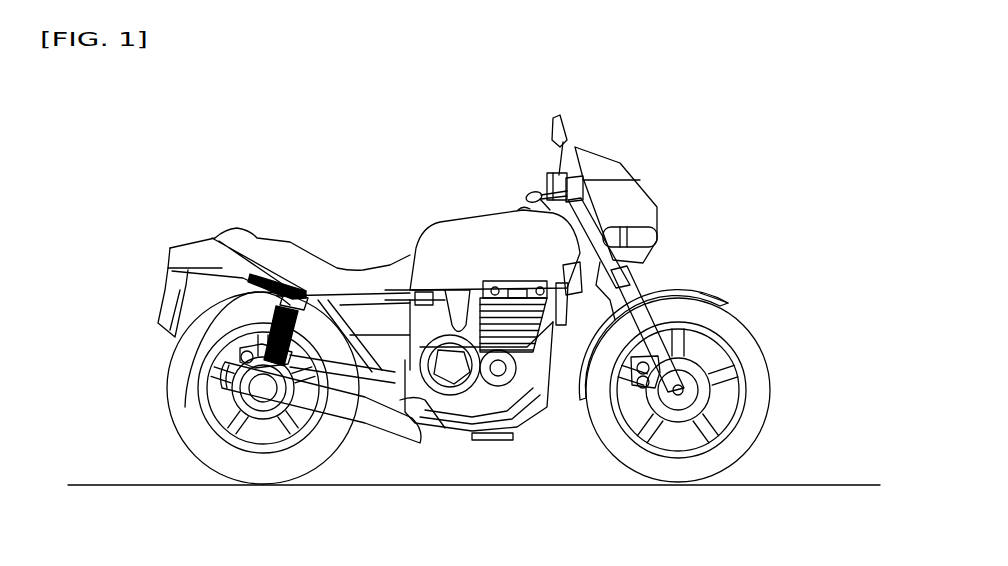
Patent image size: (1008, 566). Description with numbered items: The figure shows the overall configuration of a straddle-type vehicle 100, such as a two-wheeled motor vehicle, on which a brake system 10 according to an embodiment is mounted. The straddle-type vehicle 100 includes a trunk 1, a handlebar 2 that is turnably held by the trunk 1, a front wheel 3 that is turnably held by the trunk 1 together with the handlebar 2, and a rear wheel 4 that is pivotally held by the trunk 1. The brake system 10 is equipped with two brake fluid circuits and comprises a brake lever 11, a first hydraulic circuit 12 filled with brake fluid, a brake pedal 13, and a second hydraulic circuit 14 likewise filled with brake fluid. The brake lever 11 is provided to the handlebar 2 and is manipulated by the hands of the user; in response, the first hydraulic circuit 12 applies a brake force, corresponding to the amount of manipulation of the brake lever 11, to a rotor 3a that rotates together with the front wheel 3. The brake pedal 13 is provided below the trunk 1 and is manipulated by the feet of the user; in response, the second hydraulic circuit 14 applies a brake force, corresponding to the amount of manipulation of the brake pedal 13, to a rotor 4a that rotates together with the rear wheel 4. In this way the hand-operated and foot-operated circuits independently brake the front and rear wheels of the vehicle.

The straddle-type vehicle 100 is at (707, 85).
The trunk 1 is at (478, 243).
The handlebar 2 is at (530, 190).
The front wheel 3 is at (762, 322).
The rotor 3a is at (703, 410).
The rear wheel 4 is at (152, 359).
The rotor 4a is at (240, 413).
The brake system 10 is at (362, 165).
The brake lever 11 is at (593, 193).
The first hydraulic circuit 12 is at (659, 262).
The brake pedal 13 is at (412, 412).
The second hydraulic circuit 14 is at (356, 450).